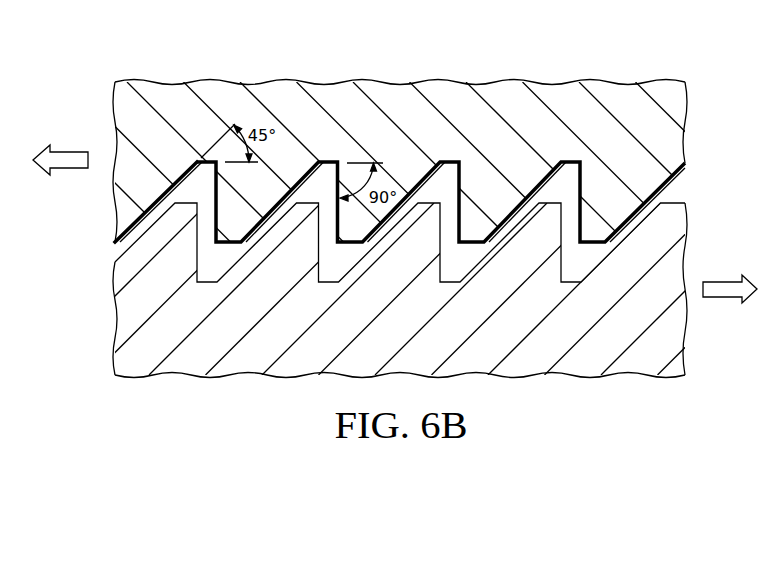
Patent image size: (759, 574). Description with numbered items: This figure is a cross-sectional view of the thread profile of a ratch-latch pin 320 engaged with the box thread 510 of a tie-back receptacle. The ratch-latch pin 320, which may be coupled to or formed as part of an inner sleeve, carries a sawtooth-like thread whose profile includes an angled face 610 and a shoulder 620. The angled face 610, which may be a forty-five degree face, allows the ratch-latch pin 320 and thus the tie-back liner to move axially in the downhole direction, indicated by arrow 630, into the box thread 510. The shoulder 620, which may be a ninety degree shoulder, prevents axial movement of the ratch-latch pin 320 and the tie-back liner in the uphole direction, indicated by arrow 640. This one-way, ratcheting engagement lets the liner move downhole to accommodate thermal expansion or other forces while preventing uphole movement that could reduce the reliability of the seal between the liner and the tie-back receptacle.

The ratch-latch pin 320 is at (380, 136).
The box thread 510 is at (388, 342).
The angled face 610 is at (130, 227).
The shoulder 620 is at (462, 170).
The arrow 630 is at (723, 298).
The arrow 640 is at (70, 151).